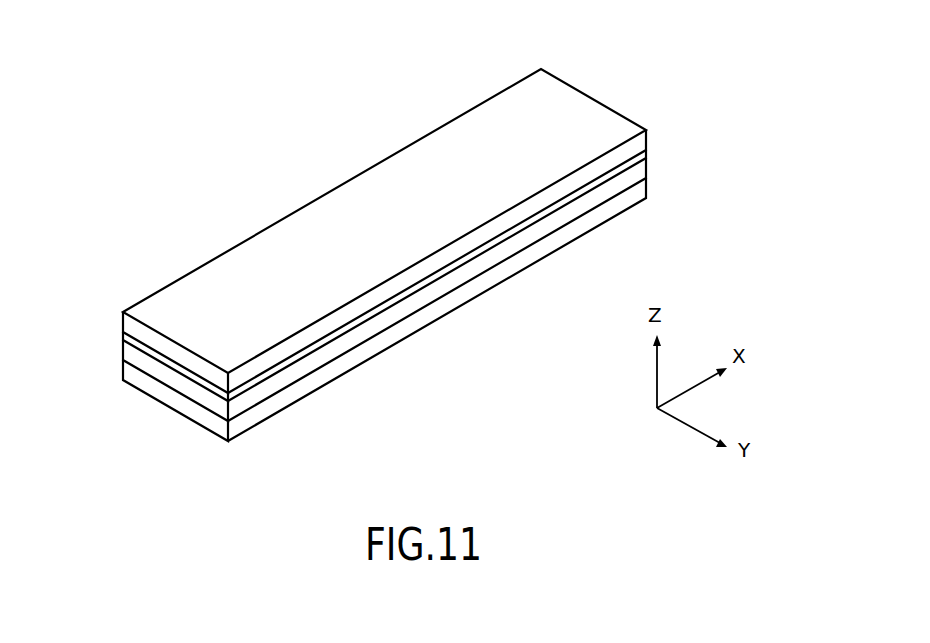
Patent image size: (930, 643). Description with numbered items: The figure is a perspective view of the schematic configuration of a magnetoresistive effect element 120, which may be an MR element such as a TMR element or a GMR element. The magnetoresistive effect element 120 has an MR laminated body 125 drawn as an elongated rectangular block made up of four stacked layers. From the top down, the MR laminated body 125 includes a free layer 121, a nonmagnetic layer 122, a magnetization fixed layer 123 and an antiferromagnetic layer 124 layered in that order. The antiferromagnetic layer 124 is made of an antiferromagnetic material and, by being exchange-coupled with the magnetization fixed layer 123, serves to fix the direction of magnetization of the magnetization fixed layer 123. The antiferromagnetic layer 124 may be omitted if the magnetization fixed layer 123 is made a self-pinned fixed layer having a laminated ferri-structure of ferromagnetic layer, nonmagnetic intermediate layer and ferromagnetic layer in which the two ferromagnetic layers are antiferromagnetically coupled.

The magnetoresistive effect element 120 is at (392, 253).
The free layer 121 is at (193, 288).
The nonmagnetic layer 122 is at (593, 185).
The magnetization fixed layer 123 is at (492, 260).
The antiferromagnetic layer 124 is at (307, 385).
The MR laminated body 125 is at (397, 150).